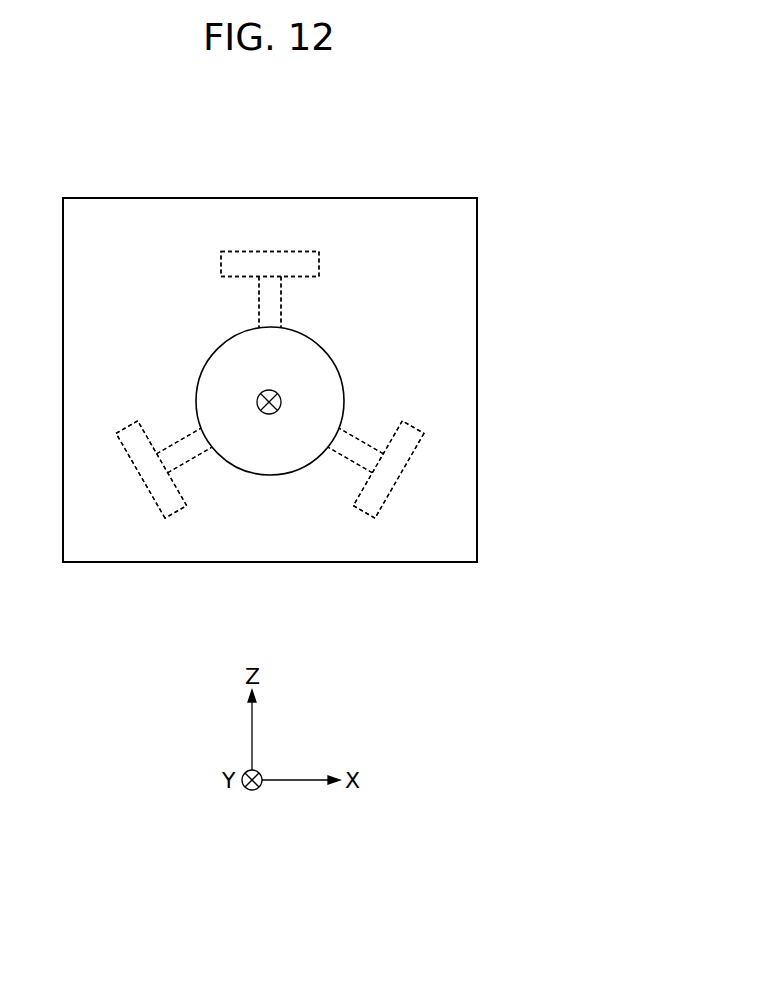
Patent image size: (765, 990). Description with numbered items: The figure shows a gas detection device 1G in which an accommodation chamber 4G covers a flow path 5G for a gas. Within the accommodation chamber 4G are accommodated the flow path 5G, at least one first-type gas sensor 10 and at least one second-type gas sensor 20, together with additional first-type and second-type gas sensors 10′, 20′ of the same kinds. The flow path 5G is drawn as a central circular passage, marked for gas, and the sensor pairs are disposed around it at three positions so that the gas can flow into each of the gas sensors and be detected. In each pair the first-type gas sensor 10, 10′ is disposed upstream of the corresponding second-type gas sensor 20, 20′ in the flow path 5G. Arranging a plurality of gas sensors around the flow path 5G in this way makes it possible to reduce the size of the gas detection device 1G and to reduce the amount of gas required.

The gas detection device 1G is at (372, 160).
The accommodation chamber 4G is at (477, 313).
The flow path 5G is at (312, 340).
The first-type gas sensor 10 is at (222, 265).
The second-type gas sensor 20 is at (222, 265).
The first-type gas sensor 10′ is at (130, 434).
The second-type gas sensor 20′ is at (130, 434).